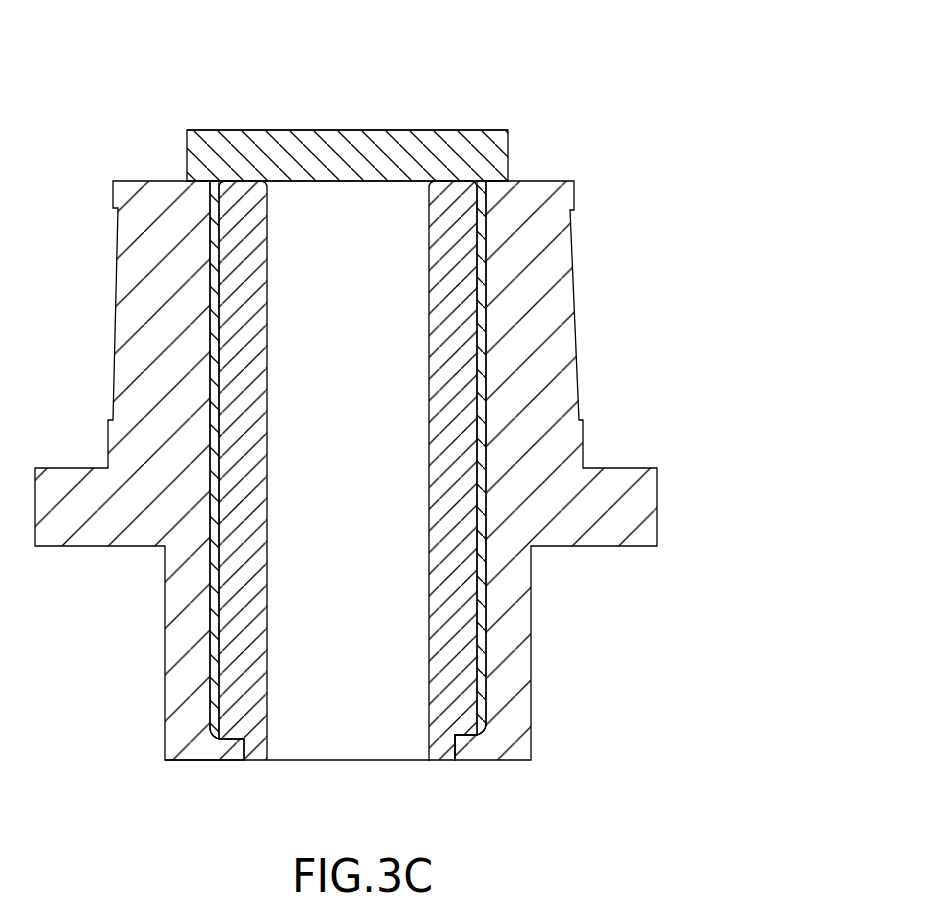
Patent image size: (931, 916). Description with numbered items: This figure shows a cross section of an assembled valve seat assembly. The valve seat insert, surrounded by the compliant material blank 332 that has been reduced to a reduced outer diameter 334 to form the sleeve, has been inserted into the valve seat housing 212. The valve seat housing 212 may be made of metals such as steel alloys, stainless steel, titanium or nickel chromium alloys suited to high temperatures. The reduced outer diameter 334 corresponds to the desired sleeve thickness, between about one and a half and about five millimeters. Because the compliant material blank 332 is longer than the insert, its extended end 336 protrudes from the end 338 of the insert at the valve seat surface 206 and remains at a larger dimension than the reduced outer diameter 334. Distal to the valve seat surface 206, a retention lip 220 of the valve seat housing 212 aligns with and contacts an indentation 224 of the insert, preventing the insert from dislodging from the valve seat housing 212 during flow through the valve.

The valve seat surface 206 is at (263, 181).
The valve seat housing 212 is at (577, 205).
The retention lip 220 is at (213, 752).
The indentation 224 is at (462, 740).
The compliant material blank 332 is at (395, 130).
The reduced outer diameter 334 is at (488, 657).
The extended end 336 is at (230, 131).
The end of valve seat insert 338 is at (402, 181).